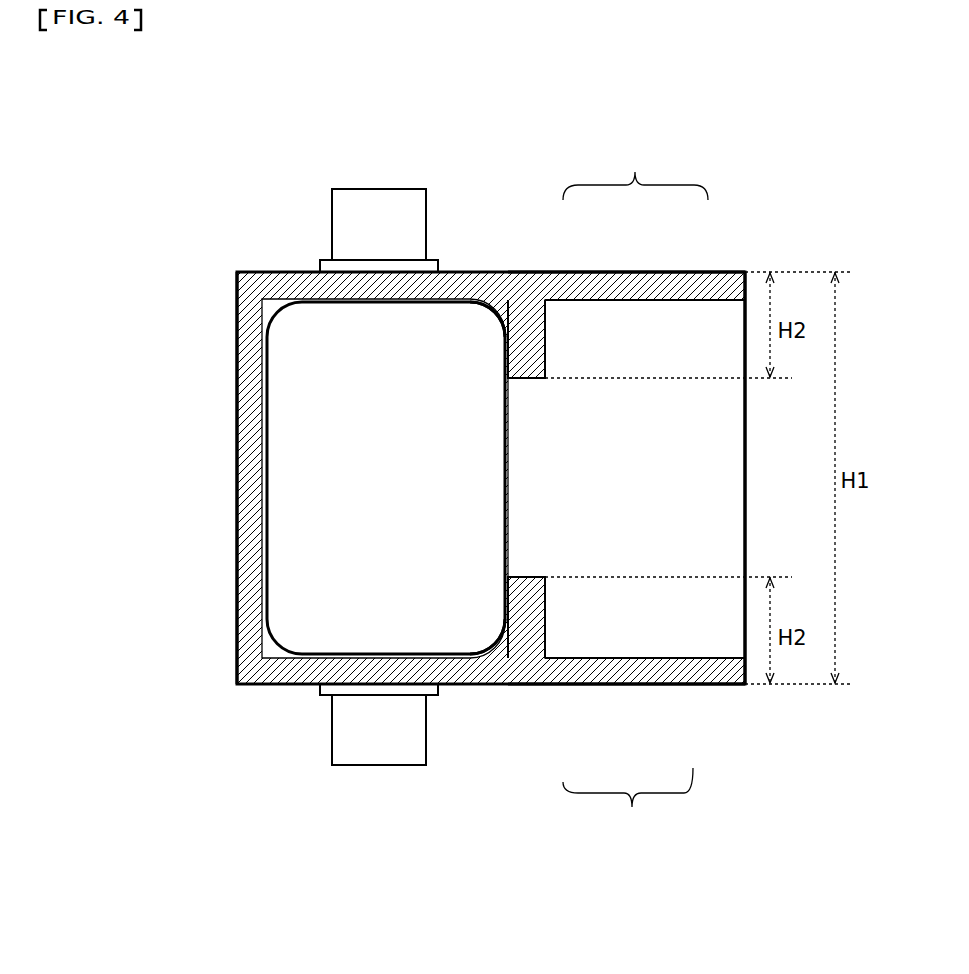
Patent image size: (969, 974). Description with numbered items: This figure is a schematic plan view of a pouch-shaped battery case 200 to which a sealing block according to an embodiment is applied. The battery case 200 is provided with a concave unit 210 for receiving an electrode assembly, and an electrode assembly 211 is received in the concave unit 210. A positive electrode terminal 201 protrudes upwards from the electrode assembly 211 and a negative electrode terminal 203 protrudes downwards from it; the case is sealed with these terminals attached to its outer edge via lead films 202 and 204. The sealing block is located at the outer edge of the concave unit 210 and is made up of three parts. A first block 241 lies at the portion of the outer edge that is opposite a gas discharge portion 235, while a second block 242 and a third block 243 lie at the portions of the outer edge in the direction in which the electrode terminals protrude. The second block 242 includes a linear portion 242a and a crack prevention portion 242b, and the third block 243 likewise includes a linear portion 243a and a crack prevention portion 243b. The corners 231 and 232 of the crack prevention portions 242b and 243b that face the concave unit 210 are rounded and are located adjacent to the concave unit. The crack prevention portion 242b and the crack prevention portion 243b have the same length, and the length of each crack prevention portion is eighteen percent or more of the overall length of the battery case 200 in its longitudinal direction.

The battery case 200 is at (112, 135).
The positive electrode terminal 201 is at (333, 190).
The lead film 202 is at (320, 262).
The negative electrode terminal 203 is at (334, 748).
The lead film 204 is at (310, 690).
The concave unit 210 is at (252, 297).
The electrode assembly 211 is at (267, 433).
The corner 231 is at (486, 322).
The corner 232 is at (476, 643).
The gas discharge portion 235 is at (540, 501).
The first block 241 is at (237, 495).
The second block 242 is at (635, 170).
The linear portion 242a is at (523, 272).
The crack prevention portion 242b is at (543, 348).
The third block 243 is at (628, 804).
The linear portion 243a is at (632, 684).
The crack prevention portion 243b is at (546, 630).